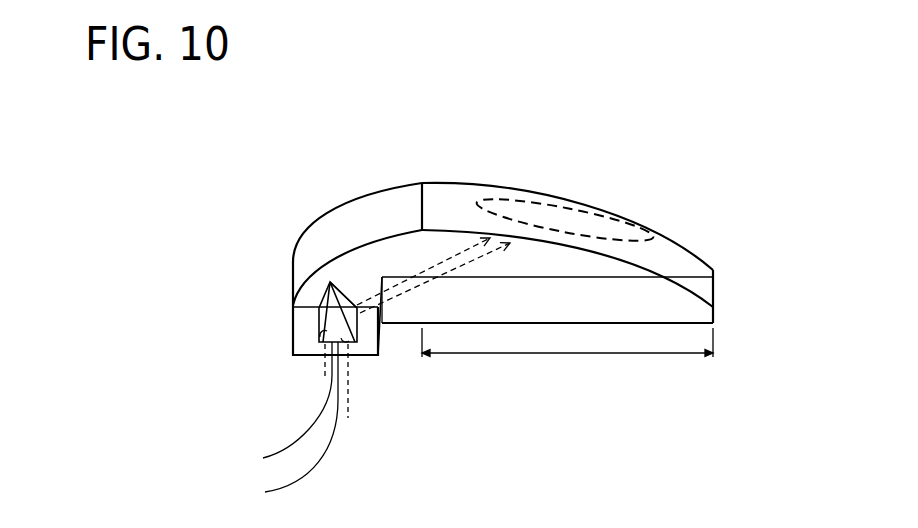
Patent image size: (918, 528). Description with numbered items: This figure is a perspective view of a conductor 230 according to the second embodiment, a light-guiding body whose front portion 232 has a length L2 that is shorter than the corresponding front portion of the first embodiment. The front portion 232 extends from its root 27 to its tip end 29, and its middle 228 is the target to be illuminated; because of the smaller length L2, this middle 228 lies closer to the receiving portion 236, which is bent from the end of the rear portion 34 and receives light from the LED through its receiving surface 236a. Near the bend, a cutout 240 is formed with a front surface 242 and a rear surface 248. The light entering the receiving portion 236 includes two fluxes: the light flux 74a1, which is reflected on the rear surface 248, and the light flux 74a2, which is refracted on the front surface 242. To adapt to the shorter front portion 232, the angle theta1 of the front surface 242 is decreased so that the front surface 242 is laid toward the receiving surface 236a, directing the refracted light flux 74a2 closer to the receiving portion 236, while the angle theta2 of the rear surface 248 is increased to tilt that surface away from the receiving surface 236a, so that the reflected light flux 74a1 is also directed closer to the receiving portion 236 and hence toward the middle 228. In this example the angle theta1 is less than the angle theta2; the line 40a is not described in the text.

The rear portion 34 is at (372, 122).
The conductor 230 is at (588, 132).
The front portion 232 is at (642, 158).
The root 27 is at (440, 193).
The middle 228 is at (598, 203).
The tip end 29 is at (717, 282).
The cutout 240 is at (306, 271).
The rear surface 248 is at (333, 309).
The front surface 242 is at (358, 315).
The angle theta2 is at (322, 332).
The angle theta1 is at (343, 342).
The light flux 74a1 is at (325, 373).
The light flux 74a2 is at (348, 418).
The receiving portion 236 is at (317, 388).
The optical fiber 40a is at (275, 420).
The receiving surface 236a is at (274, 425).
The length L2 is at (567, 343).